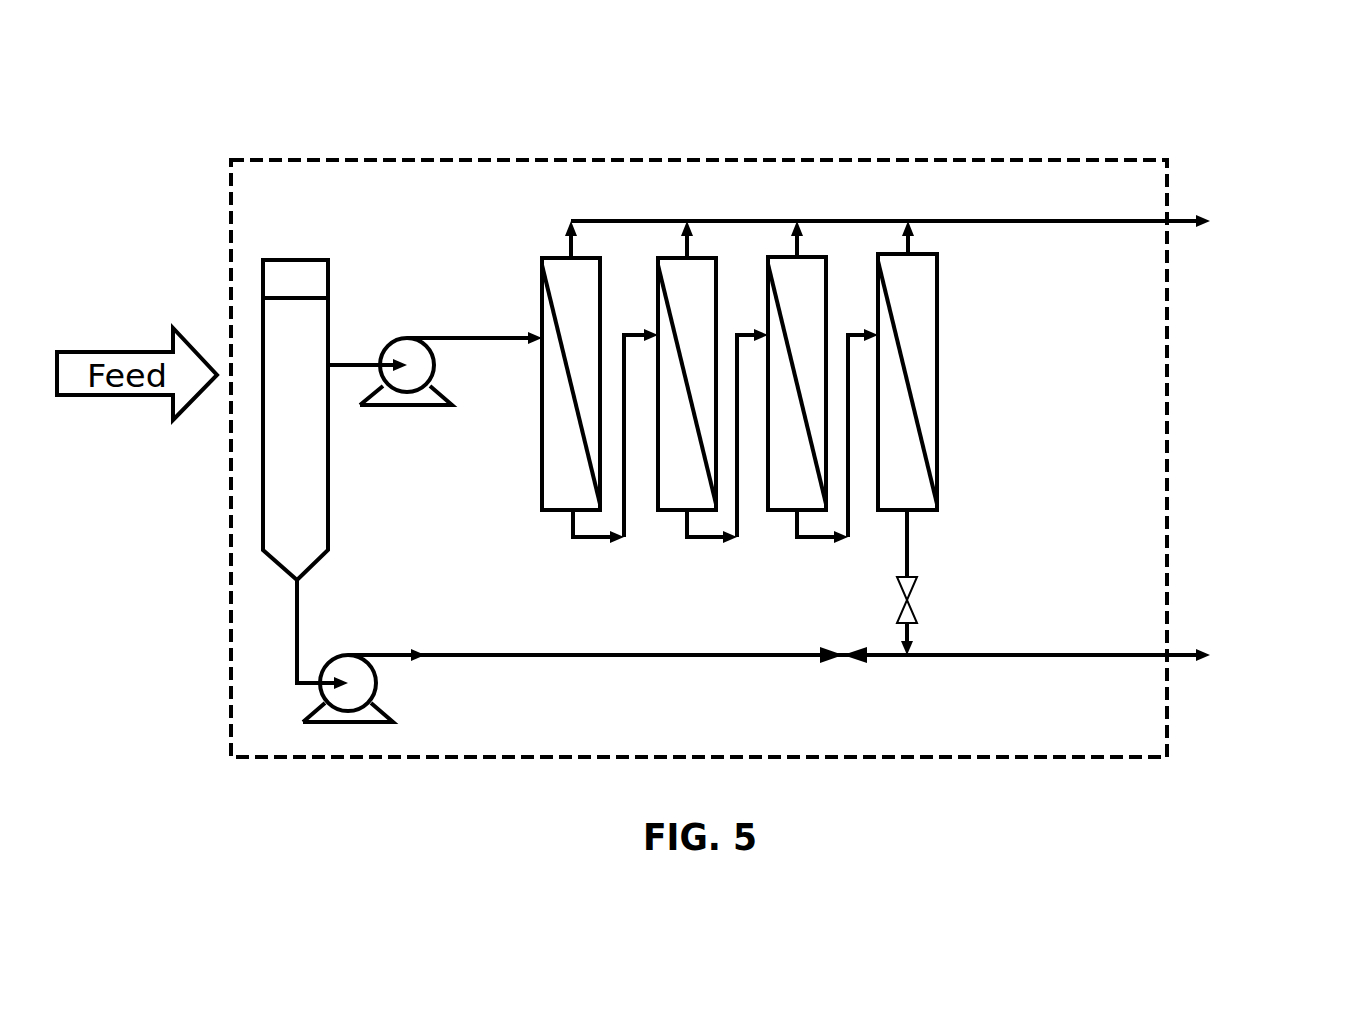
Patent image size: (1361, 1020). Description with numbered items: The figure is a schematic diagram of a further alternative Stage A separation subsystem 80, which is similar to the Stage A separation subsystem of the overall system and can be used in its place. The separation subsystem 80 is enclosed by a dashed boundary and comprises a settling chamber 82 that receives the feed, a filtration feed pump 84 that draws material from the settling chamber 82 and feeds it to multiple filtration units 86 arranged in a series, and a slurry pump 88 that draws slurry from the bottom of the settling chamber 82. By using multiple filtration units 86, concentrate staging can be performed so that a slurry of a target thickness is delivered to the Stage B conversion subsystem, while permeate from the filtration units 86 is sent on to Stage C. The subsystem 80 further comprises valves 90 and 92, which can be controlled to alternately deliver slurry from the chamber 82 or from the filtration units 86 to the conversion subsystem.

The separation subsystem 80 is at (1210, 140).
The settling chamber 82 is at (358, 284).
The filtration feed pump 84 is at (426, 422).
The filtration units 86 is at (504, 513).
The slurry pump 88 is at (374, 632).
The valve 90 is at (878, 598).
The valve 92 is at (829, 680).